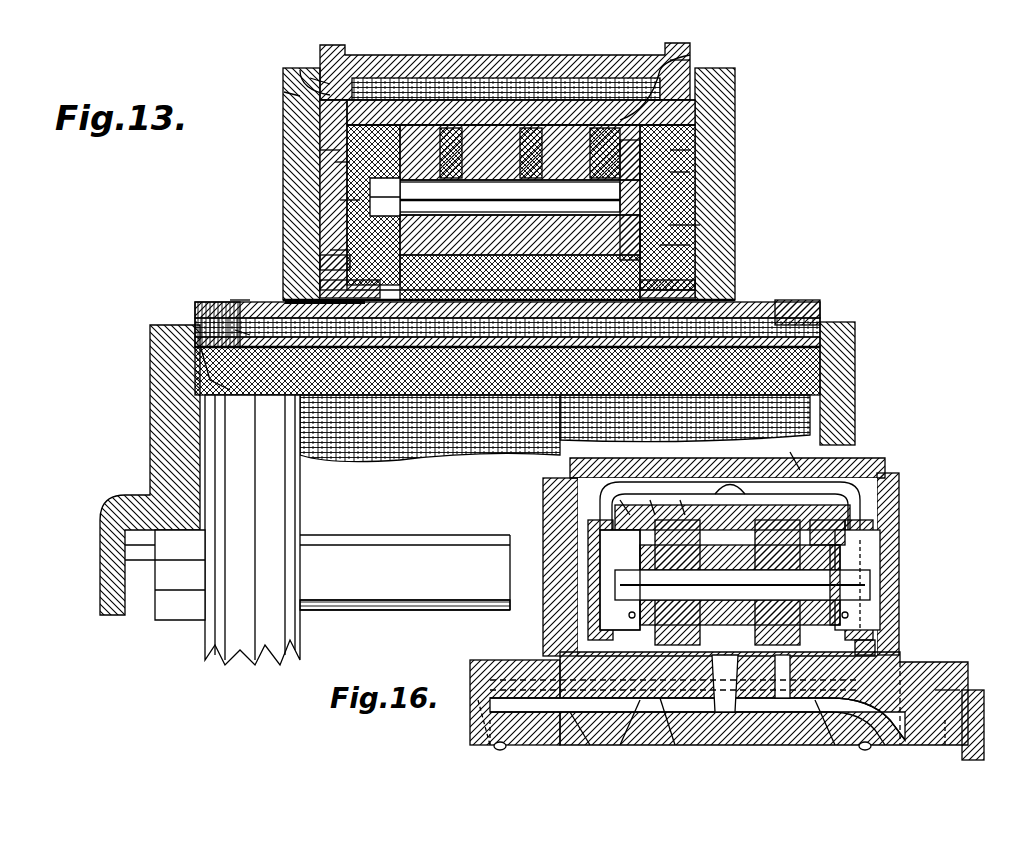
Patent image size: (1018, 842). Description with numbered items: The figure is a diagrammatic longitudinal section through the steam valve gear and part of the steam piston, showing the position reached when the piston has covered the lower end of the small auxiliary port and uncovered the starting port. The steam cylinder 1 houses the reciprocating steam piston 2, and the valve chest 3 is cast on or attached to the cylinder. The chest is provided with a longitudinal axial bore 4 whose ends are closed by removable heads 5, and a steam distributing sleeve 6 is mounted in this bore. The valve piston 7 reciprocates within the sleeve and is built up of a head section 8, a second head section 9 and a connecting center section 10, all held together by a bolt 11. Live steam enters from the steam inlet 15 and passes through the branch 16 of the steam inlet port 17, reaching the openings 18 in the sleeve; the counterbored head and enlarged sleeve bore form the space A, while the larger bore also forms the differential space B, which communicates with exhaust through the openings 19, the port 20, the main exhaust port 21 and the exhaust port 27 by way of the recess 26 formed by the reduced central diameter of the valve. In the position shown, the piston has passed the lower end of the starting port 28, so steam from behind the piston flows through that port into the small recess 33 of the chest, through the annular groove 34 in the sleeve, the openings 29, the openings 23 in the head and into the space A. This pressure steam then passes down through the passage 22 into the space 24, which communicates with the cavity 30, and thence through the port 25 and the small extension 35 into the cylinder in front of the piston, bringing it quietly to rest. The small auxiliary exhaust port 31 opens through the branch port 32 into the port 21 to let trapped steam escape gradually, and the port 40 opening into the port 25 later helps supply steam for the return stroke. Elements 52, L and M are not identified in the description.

In FIG. 13, the steam cylinder 1 is at (855, 416).
In FIG. 13, the steam piston 2 is at (300, 510).
In FIG. 13, the valve chest 3 is at (690, 50).
In FIG. 16, the valve chest 3 is at (960, 690).
In FIG. 13, the longitudinal axial bore 4 is at (430, 120).
In FIG. 13, the removable heads 5 is at (730, 82).
In FIG. 13, the steam distributing sleeve 6 is at (325, 148).
In FIG. 13, the valve piston 7 is at (335, 250).
In FIG. 13, the head section 8 is at (330, 262).
In FIG. 16, the head section 8 is at (620, 580).
In FIG. 13, the head section 9 is at (680, 172).
In FIG. 16, the head section 9 is at (860, 560).
In FIG. 13, the center section 10 is at (495, 197).
In FIG. 13, the bolt 11 is at (660, 186).
In FIG. 13, the steam inlet 15 is at (455, 140).
In FIG. 16, the steam inlet 15 is at (735, 490).
In FIG. 13, the branch of steam inlet port 16 is at (378, 75).
In FIG. 16, the branch of steam inlet port 16 is at (685, 480).
In FIG. 13, the steam inlet port 17 is at (478, 120).
In FIG. 16, the steam inlet port 17 is at (665, 485).
In FIG. 13, the openings in distributing sleeve 18 is at (290, 120).
In FIG. 16, the openings in distributing sleeve 18 is at (618, 480).
In FIG. 13, the openings in sleeve 19 is at (322, 70).
In FIG. 16, the openings in sleeve 19 is at (648, 480).
In FIG. 13, the port 20 is at (450, 330).
In FIG. 16, the port 20 is at (690, 700).
In FIG. 13, the main exhaust port 21 is at (495, 320).
In FIG. 16, the main exhaust port 21 is at (640, 712).
In FIG. 13, the passage 22 is at (328, 180).
In FIG. 13, the openings in piston head 23 is at (380, 240).
In FIG. 13, the space 24 is at (325, 290).
In FIG. 13, the port 25 is at (240, 310).
In FIG. 13, the recess 26 is at (600, 140).
In FIG. 16, the recess 26 is at (725, 610).
In FIG. 13, the exhaust port 27 is at (535, 150).
In FIG. 16, the exhaust port 27 is at (725, 720).
In FIG. 13, the starting port 28 is at (330, 360).
In FIG. 16, the starting port 28 is at (548, 712).
In FIG. 13, the openings in sleeve 29 is at (284, 92).
In FIG. 13, the cavity 30 is at (300, 296).
In FIG. 13, the auxiliary exhaust port 31 is at (200, 360).
In FIG. 16, the auxiliary exhaust port 31 is at (485, 720).
In FIG. 16, the branch port 32 is at (505, 700).
In FIG. 13, the recess 33 is at (380, 360).
In FIG. 16, the recess 33 is at (580, 725).
In FIG. 13, the annular groove 34 is at (316, 78).
In FIG. 13, the small extension 35 is at (200, 320).
In FIG. 13, the port 40 is at (240, 330).
In FIG. 16, the port 40 is at (490, 725).
In FIG. 13, the outer block 52 is at (160, 345).
In FIG. 13, the space A is at (345, 200).
In FIG. 13, the differential space B is at (335, 162).
In FIG. 16, the differential space B is at (616, 610).
In FIG. 16, the wall L is at (560, 552).
In FIG. 16, the line M is at (870, 580).